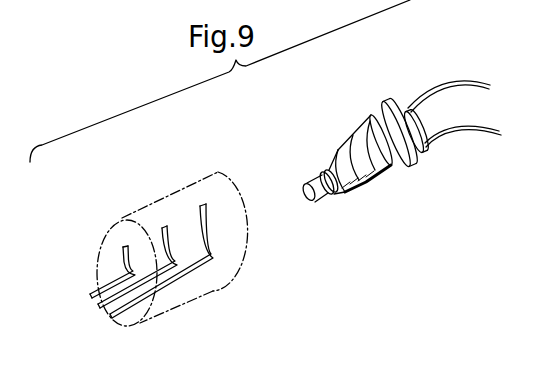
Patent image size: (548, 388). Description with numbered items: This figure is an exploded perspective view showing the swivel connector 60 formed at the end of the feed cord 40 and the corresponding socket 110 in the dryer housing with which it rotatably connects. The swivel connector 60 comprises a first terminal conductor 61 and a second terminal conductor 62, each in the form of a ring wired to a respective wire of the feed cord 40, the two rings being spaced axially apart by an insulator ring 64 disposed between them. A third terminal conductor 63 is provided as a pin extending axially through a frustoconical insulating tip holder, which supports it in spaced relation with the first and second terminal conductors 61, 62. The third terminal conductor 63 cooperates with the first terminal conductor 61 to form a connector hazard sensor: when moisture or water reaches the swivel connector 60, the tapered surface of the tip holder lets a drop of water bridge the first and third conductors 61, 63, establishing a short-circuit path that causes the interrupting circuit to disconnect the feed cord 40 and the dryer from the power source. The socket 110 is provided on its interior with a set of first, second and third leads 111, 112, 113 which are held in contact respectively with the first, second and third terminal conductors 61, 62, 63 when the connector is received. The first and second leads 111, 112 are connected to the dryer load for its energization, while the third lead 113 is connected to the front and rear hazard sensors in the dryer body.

The feed cord 40 is at (479, 127).
The swivel connector 60 is at (371, 175).
The first terminal conductor 61 is at (361, 168).
The second terminal conductor 62 is at (405, 160).
The third terminal conductor 63 is at (316, 199).
The insulator ring 64 is at (378, 160).
The socket 110 is at (200, 294).
The first lead 111 is at (123, 257).
The second lead 112 is at (162, 225).
The third lead 113 is at (200, 205).